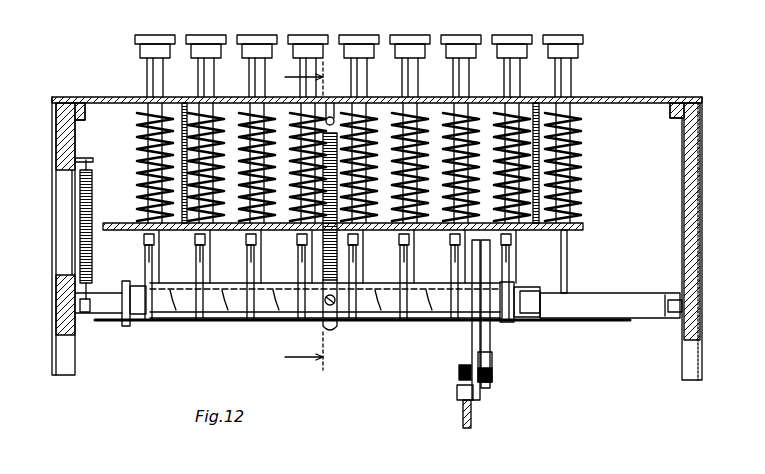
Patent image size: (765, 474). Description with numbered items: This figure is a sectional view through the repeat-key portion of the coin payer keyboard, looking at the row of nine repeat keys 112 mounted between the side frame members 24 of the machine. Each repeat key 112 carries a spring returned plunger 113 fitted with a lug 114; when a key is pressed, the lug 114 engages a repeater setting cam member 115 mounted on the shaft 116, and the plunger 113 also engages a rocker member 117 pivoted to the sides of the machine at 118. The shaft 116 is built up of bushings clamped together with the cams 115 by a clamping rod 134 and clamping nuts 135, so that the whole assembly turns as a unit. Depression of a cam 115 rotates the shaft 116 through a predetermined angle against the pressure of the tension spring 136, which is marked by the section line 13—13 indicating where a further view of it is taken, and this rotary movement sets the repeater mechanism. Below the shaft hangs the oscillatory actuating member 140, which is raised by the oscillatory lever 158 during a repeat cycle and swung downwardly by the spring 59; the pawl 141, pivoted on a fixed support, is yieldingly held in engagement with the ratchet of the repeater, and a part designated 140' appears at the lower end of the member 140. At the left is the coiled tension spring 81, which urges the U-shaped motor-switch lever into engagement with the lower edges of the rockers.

The section line 13- 13 is at (317, 216).
The side frame members 24 is at (682, 283).
The spring 59 is at (459, 370).
The coiled tension spring 81 is at (92, 216).
The repeat keys 112 is at (147, 72).
The spring returned plunger 113 is at (145, 176).
The lug 114 is at (155, 241).
The repeater setting cam member 115 is at (145, 266).
The shaft 116 is at (233, 305).
The rocker member 117 is at (585, 322).
The pivot 118 is at (668, 310).
The clamping rod 134 is at (538, 297).
The clamping nuts 135 is at (142, 324).
The tension spring 136 is at (340, 268).
The oscillatory actuating member 140 is at (454, 320).
The lever foot 140' is at (442, 394).
The pawl 141 is at (492, 372).
The oscillatory lever 158 is at (474, 416).